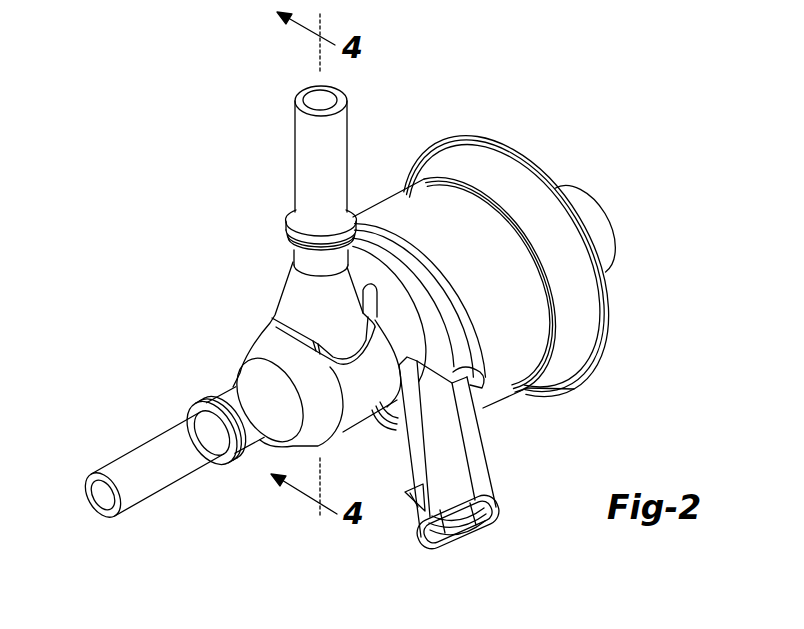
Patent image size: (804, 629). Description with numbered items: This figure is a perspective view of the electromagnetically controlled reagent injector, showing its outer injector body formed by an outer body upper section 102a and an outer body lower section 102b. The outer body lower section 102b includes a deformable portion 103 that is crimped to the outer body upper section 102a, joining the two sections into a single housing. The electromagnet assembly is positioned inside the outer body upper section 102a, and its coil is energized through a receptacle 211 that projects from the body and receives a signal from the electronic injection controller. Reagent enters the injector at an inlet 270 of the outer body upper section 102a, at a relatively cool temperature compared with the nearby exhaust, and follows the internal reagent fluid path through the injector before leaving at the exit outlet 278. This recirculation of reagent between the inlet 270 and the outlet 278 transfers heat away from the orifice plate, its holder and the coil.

The inlet 270 is at (309, 99).
The outer body lower section 102b is at (423, 205).
The outer body upper section 102a is at (258, 346).
The outlet 278 is at (100, 497).
The deformable portion 103 is at (480, 380).
The receptacle 211 is at (466, 538).